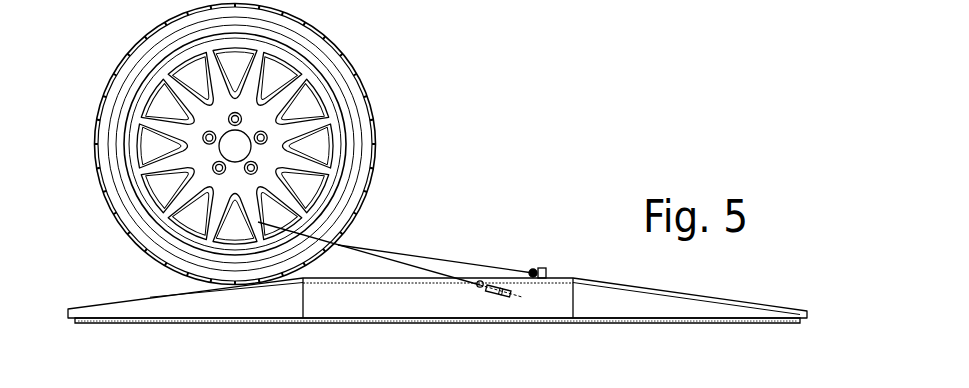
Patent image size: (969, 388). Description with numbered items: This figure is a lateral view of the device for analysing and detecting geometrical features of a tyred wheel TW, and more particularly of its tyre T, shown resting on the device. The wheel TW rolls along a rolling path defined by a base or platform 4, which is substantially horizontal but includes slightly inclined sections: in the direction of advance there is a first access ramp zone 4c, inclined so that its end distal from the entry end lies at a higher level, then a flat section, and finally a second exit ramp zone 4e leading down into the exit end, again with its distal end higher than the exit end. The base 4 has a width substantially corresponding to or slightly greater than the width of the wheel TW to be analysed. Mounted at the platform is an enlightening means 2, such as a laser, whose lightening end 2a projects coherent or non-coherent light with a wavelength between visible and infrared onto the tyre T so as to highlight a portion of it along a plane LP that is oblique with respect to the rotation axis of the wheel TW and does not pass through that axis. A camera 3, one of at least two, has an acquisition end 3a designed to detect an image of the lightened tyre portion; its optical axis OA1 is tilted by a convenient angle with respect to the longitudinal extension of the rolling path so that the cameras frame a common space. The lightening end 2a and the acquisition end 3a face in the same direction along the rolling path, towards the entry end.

The tyre T is at (125, 62).
The tyred wheel TW is at (358, 117).
The optical axis OA1 is at (373, 250).
The plane LP is at (402, 262).
The lightening end 2a is at (478, 282).
The enlightening means 2 is at (497, 292).
The acquisition end 3a is at (530, 271).
The camera 3 is at (541, 271).
The base or platform 4 is at (338, 302).
The first access ramp zone 4c is at (122, 302).
The second exit ramp zone 4e is at (737, 302).